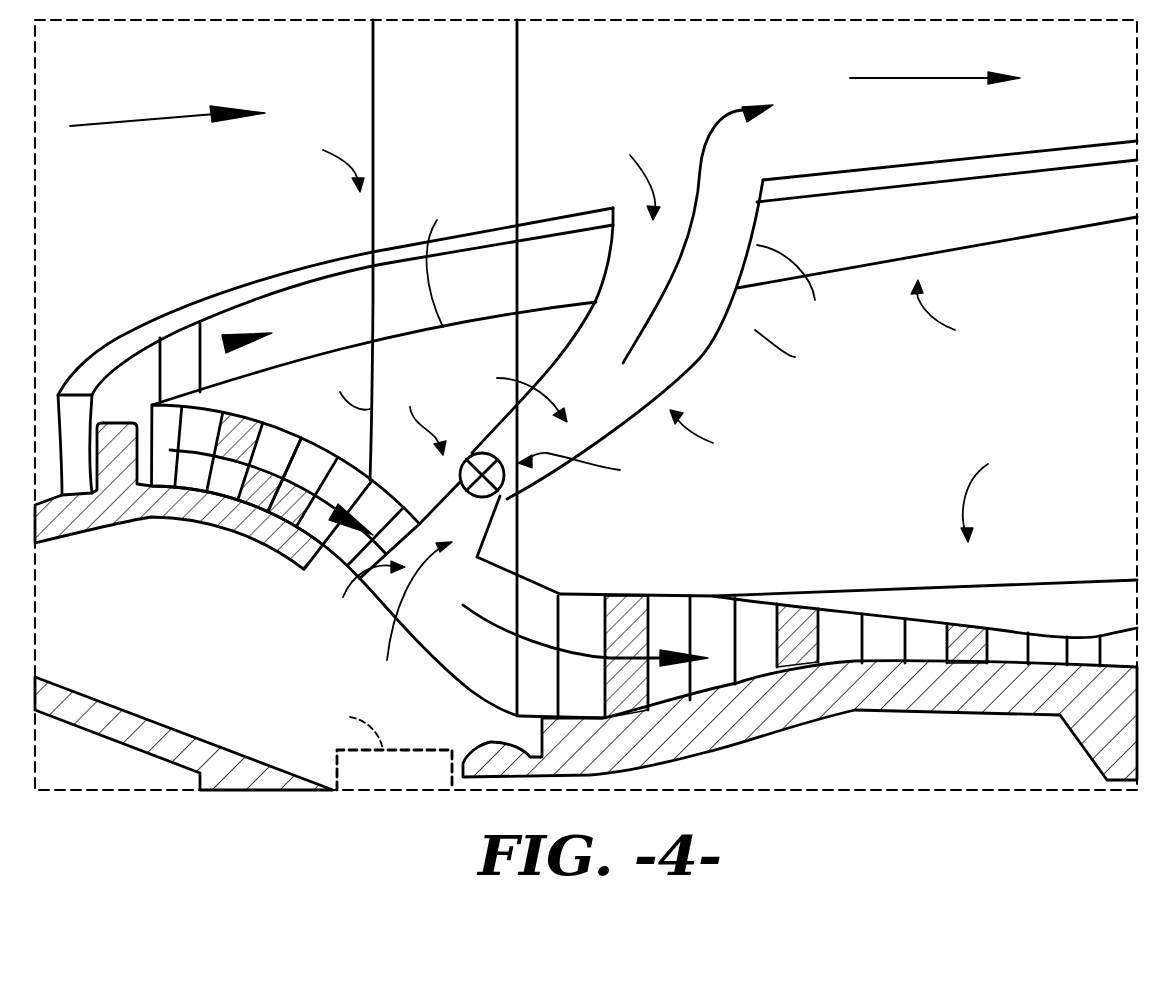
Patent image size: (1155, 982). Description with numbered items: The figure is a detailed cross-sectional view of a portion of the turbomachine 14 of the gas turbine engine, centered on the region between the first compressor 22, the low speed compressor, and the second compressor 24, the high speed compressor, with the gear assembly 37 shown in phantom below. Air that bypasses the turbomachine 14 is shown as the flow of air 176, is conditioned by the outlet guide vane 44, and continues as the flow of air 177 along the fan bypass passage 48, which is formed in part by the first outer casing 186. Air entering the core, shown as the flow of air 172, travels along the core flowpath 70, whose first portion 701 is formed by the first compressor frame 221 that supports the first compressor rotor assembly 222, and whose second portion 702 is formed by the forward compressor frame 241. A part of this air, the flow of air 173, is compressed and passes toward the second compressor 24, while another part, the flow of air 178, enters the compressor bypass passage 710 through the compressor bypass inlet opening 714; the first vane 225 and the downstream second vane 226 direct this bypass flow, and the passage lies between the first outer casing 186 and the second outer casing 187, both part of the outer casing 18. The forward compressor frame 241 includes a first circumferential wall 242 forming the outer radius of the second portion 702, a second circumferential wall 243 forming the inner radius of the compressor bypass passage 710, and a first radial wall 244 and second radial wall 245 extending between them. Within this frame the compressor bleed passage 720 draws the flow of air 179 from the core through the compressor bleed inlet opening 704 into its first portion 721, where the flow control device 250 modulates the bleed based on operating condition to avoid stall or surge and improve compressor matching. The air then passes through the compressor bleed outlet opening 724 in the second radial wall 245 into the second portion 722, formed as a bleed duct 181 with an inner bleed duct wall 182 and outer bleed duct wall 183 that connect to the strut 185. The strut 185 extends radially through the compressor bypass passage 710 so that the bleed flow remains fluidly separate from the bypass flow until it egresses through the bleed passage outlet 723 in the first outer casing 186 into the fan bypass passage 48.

The turbomachine 14 is at (993, 490).
The outer casing 18 is at (947, 318).
The first compressor 22 is at (206, 545).
The second compressor 24 is at (918, 738).
The gear assembly 37 is at (345, 724).
The outlet guide vane 44 is at (517, 108).
The fan bypass passage 48 is at (887, 135).
The core flowpath 70 is at (752, 620).
The flow of air 172 is at (297, 479).
The flow of air 173 is at (613, 630).
The flow of air 176 is at (145, 126).
The flow of air 177 is at (920, 78).
The flow of air 178 is at (185, 343).
The flow of air 179 is at (713, 147).
The bleed duct 181 is at (803, 352).
The inner bleed duct wall 182 is at (719, 434).
The outer bleed duct wall 183 is at (562, 360).
The strut 185 is at (799, 292).
The first outer casing 186 is at (1082, 162).
The second outer casing 187 is at (1010, 250).
The first compressor frame 221 is at (238, 256).
The first compressor rotor assembly 222 is at (117, 425).
The first vane 225 is at (200, 345).
The second vane 226 is at (517, 270).
The forward compressor frame 241 is at (317, 164).
The first circumferential wall 242 is at (402, 518).
The second circumferential wall 243 is at (444, 254).
The first radial wall 244 is at (341, 383).
The second radial wall 245 is at (517, 538).
The flow control device 250 is at (513, 513).
The first portion of the core flowpath 701 is at (204, 440).
The second portion of the core flowpath 702 is at (357, 600).
The compressor bleed inlet opening 704 is at (408, 620).
The compressor bypass passage 710 is at (317, 310).
The compressor bypass inlet opening 714 is at (153, 437).
The compressor bleed passage 720 is at (688, 352).
The first portion of the compressor bleed passage 721 is at (410, 413).
The second portion of the compressor bleed passage 722 is at (502, 392).
The bleed passage outlet 723 is at (617, 174).
The compressor bleed outlet opening 724 is at (600, 471).